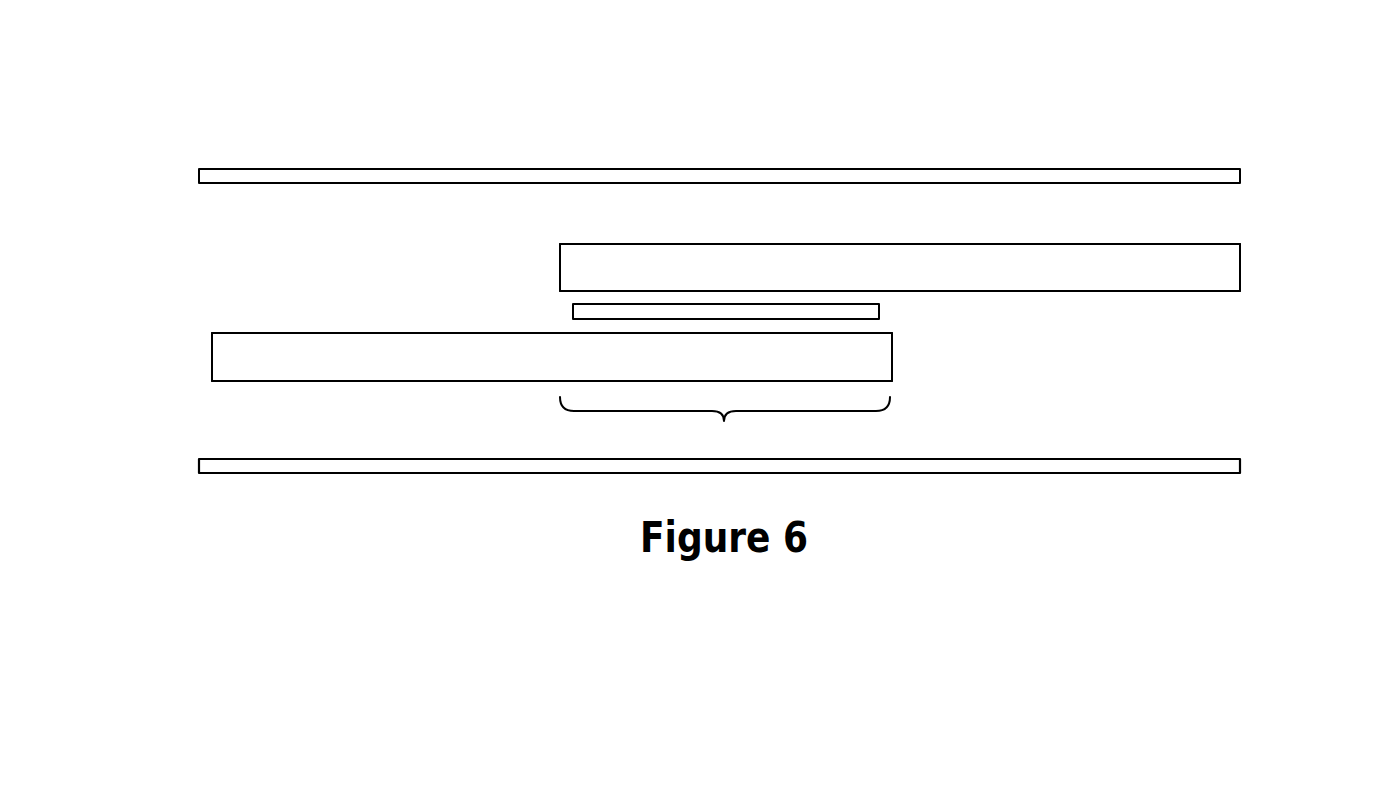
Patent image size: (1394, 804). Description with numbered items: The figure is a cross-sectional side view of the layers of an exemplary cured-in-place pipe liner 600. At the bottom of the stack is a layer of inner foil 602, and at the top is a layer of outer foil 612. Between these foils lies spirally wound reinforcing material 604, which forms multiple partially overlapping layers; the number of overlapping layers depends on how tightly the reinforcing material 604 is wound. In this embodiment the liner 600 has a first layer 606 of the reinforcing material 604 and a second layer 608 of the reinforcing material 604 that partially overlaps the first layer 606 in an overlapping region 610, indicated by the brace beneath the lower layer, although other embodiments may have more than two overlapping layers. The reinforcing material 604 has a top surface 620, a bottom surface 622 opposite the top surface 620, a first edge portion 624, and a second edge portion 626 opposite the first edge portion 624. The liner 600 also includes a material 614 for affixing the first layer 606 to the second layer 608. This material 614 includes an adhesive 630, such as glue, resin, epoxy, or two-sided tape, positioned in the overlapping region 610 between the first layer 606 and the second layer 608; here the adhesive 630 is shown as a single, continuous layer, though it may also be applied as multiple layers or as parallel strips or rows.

The liner 600 is at (242, 130).
The inner foil 602 is at (1240, 466).
The reinforcing material 604 is at (723, 285).
The first layer 606 is at (212, 365).
The second layer 608 is at (1240, 244).
The overlapping region 610 is at (725, 425).
The outer foil 612 is at (1240, 176).
The material for affixing 614 is at (918, 307).
The top surface 620 is at (880, 243).
The bottom surface 622 is at (1137, 293).
The first edge portion 624 is at (531, 263).
The second edge portion 626 is at (923, 365).
The adhesive 630 is at (572, 307).